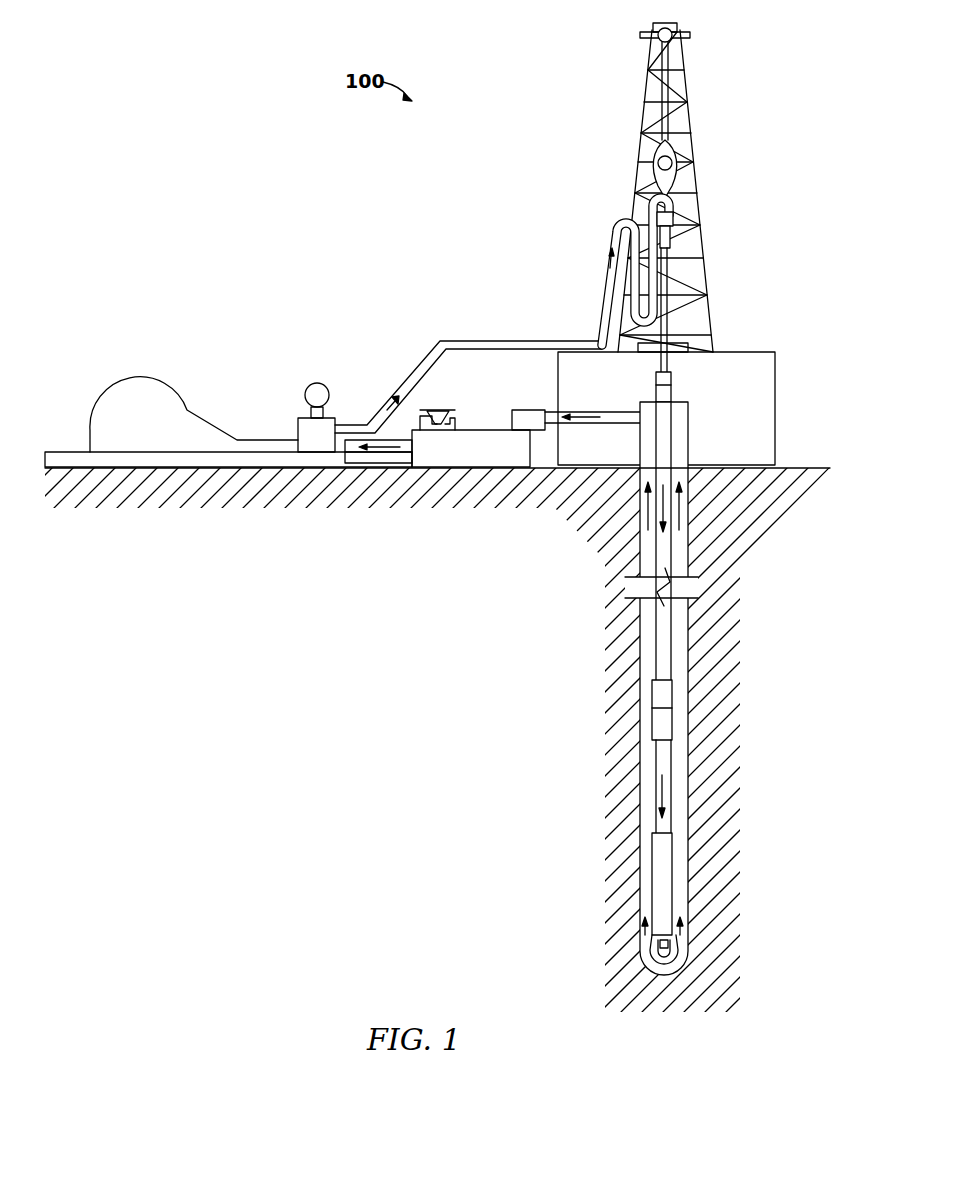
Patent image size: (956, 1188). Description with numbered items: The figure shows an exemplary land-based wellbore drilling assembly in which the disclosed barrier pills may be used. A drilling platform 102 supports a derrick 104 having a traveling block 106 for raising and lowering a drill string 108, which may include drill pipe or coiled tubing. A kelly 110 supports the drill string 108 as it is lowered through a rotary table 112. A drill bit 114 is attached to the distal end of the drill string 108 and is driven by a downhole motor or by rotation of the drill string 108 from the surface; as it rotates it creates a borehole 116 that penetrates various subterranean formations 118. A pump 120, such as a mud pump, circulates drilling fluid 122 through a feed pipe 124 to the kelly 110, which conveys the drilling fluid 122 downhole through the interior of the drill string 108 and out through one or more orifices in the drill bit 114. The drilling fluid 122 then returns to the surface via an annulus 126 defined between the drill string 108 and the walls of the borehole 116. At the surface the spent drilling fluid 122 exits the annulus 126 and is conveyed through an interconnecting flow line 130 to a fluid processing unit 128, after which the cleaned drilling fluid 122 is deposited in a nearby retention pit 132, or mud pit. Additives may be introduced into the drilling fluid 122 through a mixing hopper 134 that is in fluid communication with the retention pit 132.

The drilling platform 102 is at (777, 362).
The derrick 104 is at (690, 113).
The traveling block 106 is at (680, 153).
The drill string 108 is at (665, 558).
The kelly 110 is at (665, 268).
The rotary table 112 is at (688, 347).
The drill bit 114 is at (685, 950).
The borehole 116 is at (688, 645).
The subterranean formations 118 is at (541, 676).
The pump 120 is at (152, 433).
The drilling fluid 122 is at (357, 425).
The feed pipe 124 is at (455, 333).
The annulus 126 is at (675, 790).
The fluid processing unit 128 is at (528, 410).
The flow line 130 is at (625, 425).
The retention pit 132 is at (507, 455).
The mixing hopper 134 is at (426, 440).